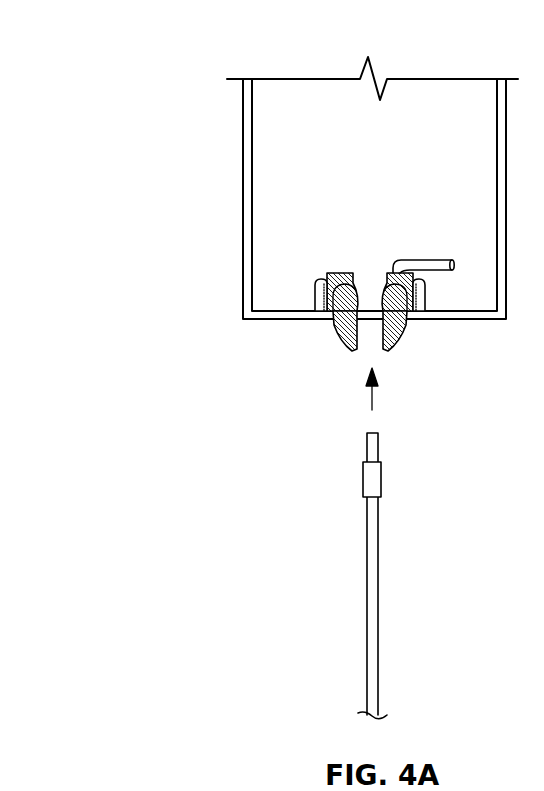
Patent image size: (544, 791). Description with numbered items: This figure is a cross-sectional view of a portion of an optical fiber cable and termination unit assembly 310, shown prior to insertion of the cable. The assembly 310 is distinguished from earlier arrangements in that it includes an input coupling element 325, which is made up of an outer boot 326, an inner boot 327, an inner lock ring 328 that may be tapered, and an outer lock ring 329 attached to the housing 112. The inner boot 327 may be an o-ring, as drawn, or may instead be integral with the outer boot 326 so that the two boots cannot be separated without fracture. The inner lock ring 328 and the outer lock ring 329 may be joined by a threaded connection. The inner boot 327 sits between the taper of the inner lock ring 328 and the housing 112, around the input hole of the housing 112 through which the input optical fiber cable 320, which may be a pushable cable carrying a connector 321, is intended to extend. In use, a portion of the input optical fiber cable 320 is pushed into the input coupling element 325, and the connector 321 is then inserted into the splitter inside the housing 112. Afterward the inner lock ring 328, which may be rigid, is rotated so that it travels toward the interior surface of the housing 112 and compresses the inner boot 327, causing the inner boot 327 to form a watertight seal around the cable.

The optical fiber cable and termination unit assembly 310 is at (168, 53).
The housing 112 is at (247, 200).
The inner lock ring 328 is at (333, 273).
The inner boot 327 is at (358, 293).
The outer lock ring 329 is at (317, 295).
The input coupling element 325 is at (335, 338).
The outer boot 326 is at (397, 330).
The input optical fiber cable 320 is at (390, 562).
The connector 321 is at (368, 481).